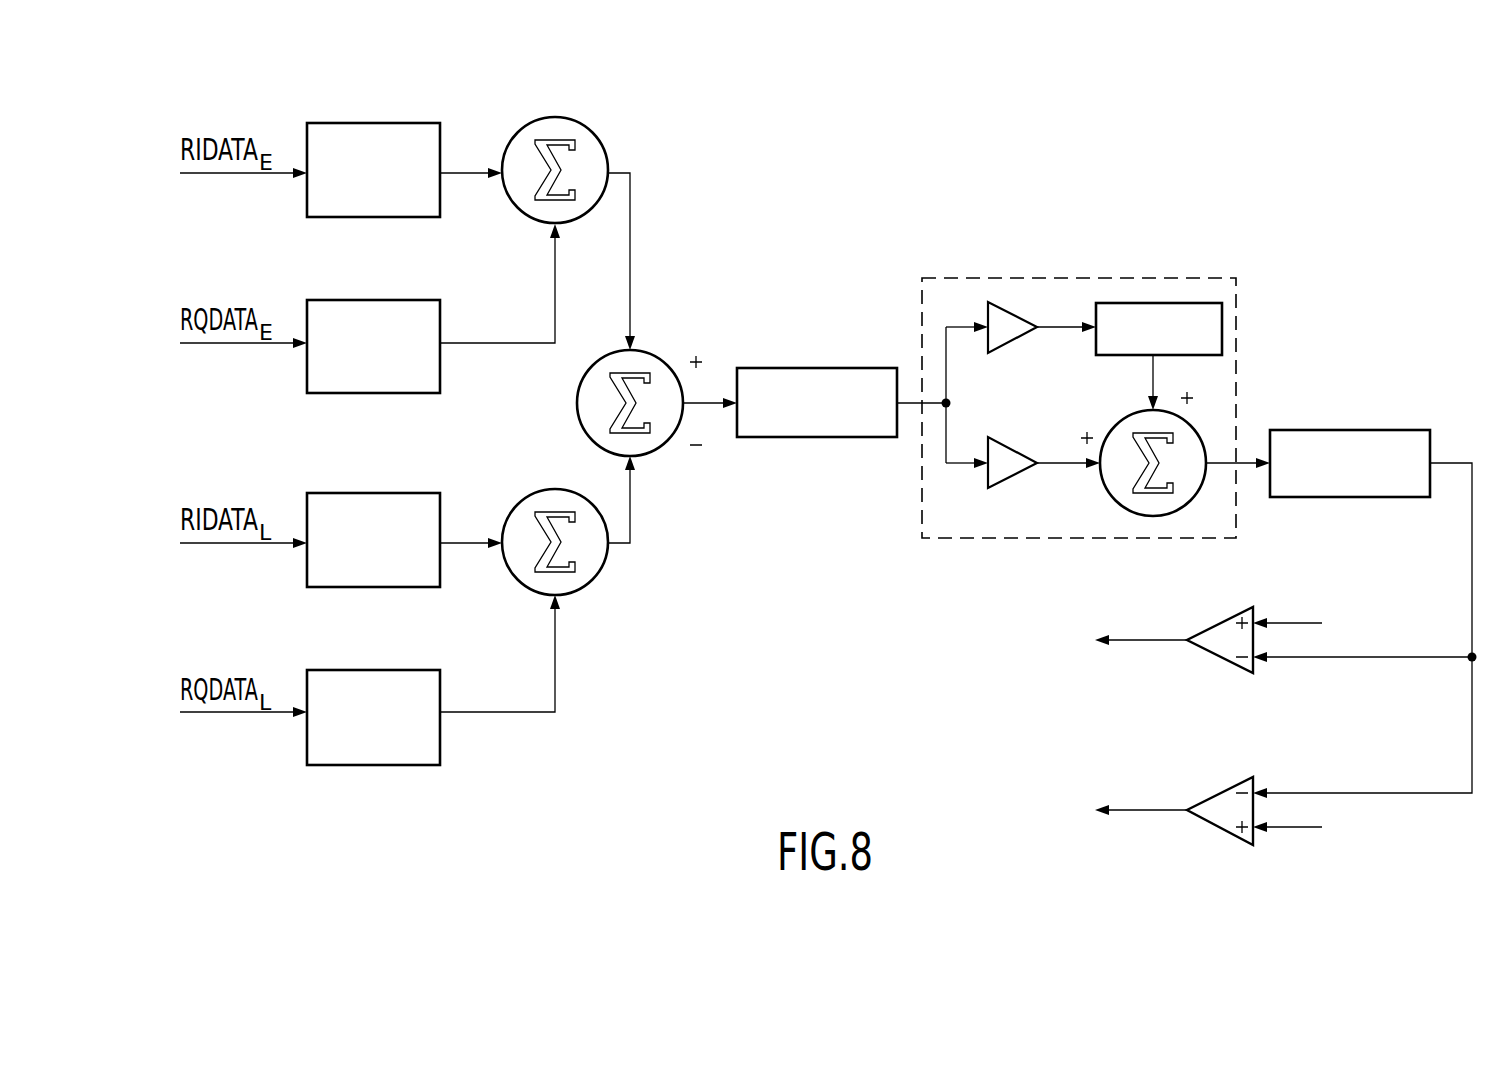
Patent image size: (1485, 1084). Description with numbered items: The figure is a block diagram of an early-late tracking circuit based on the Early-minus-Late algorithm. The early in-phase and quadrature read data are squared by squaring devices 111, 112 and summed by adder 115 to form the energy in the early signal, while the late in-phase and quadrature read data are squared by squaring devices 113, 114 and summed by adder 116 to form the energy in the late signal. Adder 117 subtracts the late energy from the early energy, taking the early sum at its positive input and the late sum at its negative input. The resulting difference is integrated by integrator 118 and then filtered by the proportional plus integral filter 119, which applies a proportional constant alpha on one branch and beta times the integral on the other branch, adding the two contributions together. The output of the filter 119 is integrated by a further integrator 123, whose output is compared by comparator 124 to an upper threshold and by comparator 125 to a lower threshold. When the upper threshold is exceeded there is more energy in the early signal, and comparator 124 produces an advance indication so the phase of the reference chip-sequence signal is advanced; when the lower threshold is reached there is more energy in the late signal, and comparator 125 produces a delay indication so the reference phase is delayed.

The squaring device 111 is at (440, 123).
The squaring device 112 is at (440, 300).
The squaring device 113 is at (440, 493).
The squaring device 114 is at (440, 670).
The adder 115 is at (587, 128).
The adder 116 is at (596, 577).
The adder 117 is at (667, 366).
The integrator 118 is at (816, 368).
The proportional plus integral filter 119 is at (1080, 278).
The integrator 123 is at (1352, 430).
The comparator 124 is at (1255, 605).
The comparator 125 is at (1255, 777).